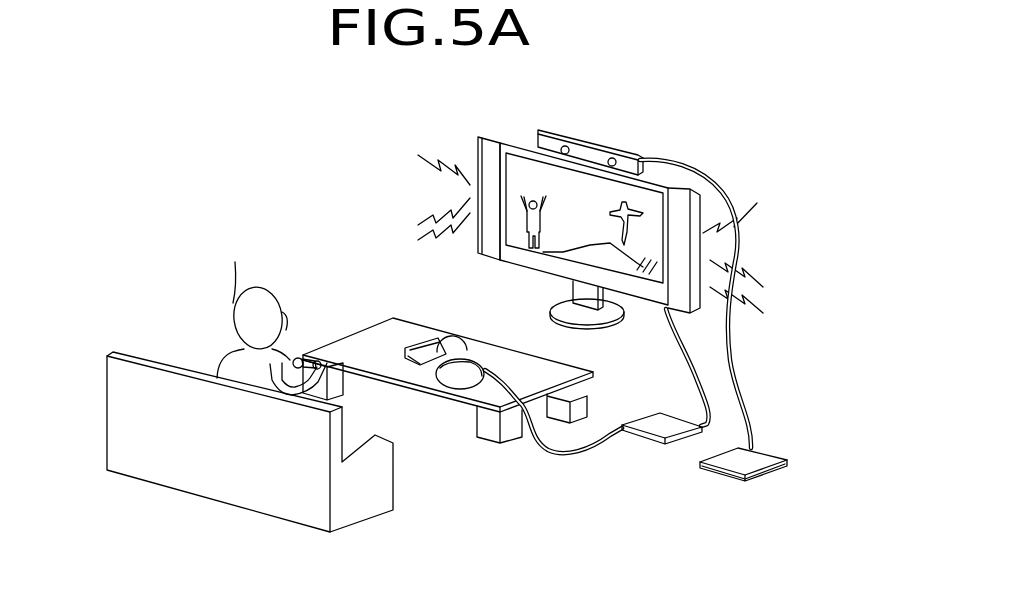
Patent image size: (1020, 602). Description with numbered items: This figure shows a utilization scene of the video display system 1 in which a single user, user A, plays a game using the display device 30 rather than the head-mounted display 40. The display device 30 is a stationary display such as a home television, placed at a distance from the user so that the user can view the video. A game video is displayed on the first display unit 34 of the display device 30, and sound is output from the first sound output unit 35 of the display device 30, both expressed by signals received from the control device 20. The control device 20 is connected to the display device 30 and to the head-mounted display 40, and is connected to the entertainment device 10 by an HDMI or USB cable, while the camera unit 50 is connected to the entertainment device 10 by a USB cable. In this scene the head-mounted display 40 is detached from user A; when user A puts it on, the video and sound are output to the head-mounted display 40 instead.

The video display system 1 is at (221, 148).
The entertainment device 10 is at (767, 450).
The control device 20 is at (660, 443).
The display device 30 is at (525, 257).
The first display unit 34 is at (522, 165).
The first sound output unit 35 is at (488, 250).
The head-mounted display 40 is at (462, 338).
The camera unit 50 is at (617, 148).